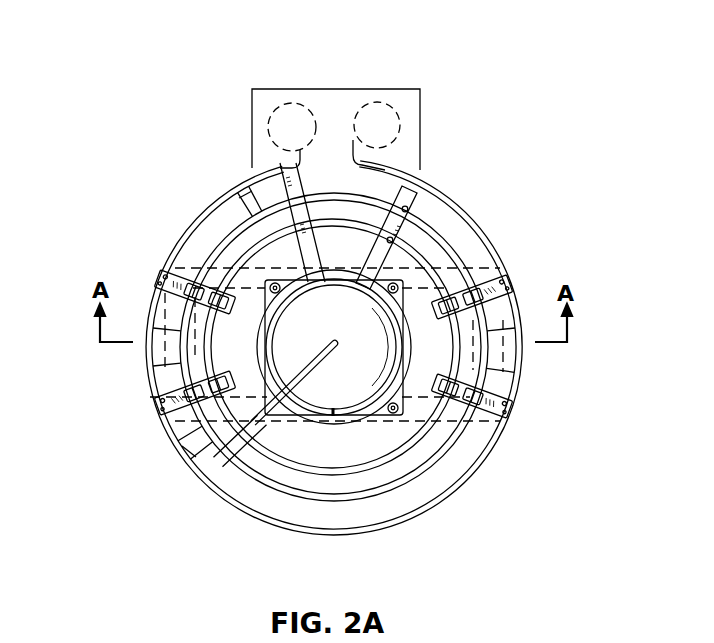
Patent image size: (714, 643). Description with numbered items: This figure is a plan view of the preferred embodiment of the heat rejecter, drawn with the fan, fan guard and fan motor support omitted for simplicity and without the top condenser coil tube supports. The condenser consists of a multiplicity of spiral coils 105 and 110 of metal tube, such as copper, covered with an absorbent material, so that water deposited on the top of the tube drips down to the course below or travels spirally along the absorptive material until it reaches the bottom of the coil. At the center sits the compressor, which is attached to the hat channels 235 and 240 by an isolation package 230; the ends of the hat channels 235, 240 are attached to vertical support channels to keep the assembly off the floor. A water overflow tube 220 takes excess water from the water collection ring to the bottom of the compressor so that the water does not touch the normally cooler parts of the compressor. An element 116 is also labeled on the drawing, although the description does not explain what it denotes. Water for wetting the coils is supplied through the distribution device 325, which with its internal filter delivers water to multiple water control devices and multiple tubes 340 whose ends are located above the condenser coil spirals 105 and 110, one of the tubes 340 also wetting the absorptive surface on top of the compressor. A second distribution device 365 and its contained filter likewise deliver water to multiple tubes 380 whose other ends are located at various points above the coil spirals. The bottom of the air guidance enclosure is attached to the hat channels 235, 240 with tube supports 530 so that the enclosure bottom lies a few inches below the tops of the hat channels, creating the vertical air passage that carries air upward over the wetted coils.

The condenser coil 105 is at (213, 213).
The condenser coil 110 is at (243, 262).
The support arm 116 is at (414, 188).
The water overflow tube 220 is at (369, 460).
The isolation package 230 is at (335, 413).
The hat channel 235 is at (455, 240).
The hat channel 240 is at (397, 260).
The distribution device 325 is at (283, 98).
The water tube 340 is at (217, 470).
The distribution device 365 is at (389, 102).
The water tube 380 is at (510, 317).
The tube support 530 is at (168, 430).